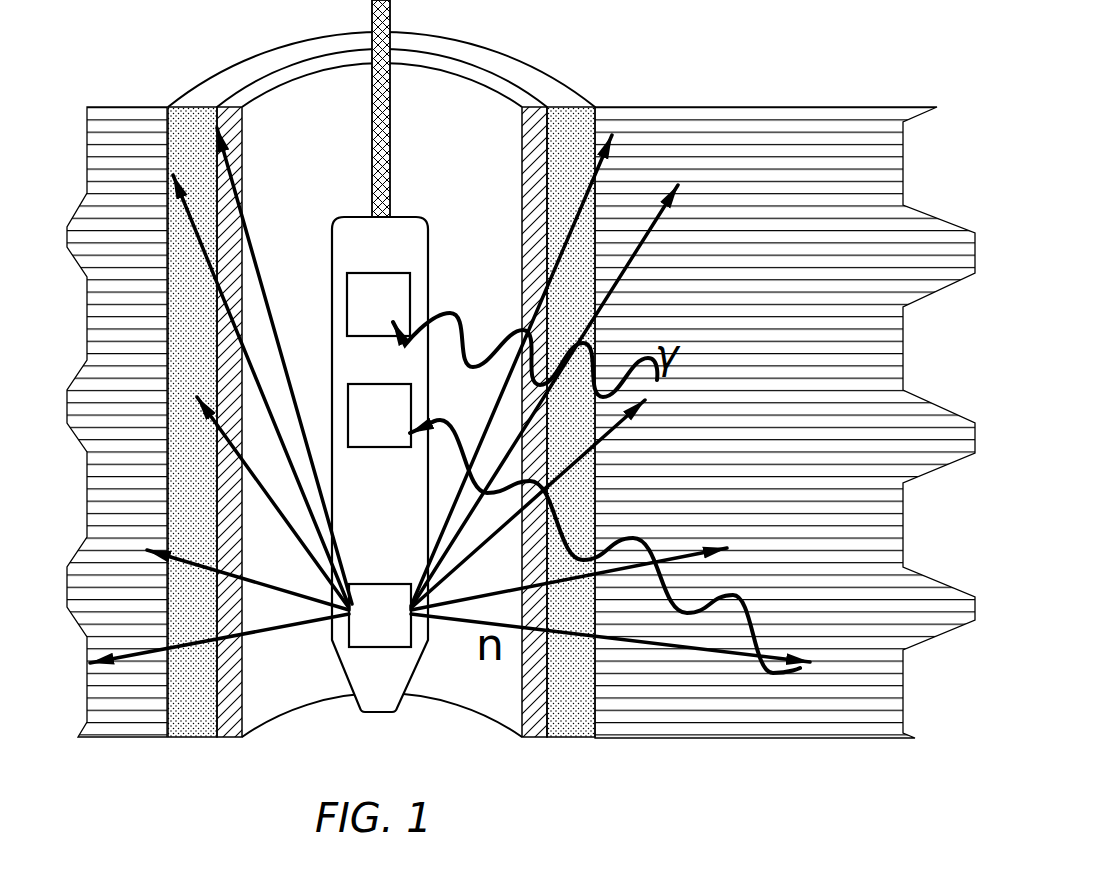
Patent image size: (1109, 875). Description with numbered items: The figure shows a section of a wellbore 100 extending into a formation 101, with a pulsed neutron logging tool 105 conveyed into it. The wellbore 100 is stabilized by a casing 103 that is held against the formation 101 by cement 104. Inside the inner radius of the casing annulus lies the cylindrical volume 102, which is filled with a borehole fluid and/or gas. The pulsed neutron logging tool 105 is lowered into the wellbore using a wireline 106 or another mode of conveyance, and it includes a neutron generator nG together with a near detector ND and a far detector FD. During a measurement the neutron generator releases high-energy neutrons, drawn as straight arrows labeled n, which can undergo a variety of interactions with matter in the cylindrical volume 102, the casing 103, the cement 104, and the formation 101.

The wellbore 100 is at (473, 47).
The formation 101 is at (521, 422).
The cylindrical volume 102 is at (332, 108).
The casing 103 is at (533, 737).
The cement 104 is at (574, 737).
The pulsed neutron logging tool 105 is at (397, 240).
The wireline 106 is at (380, 188).